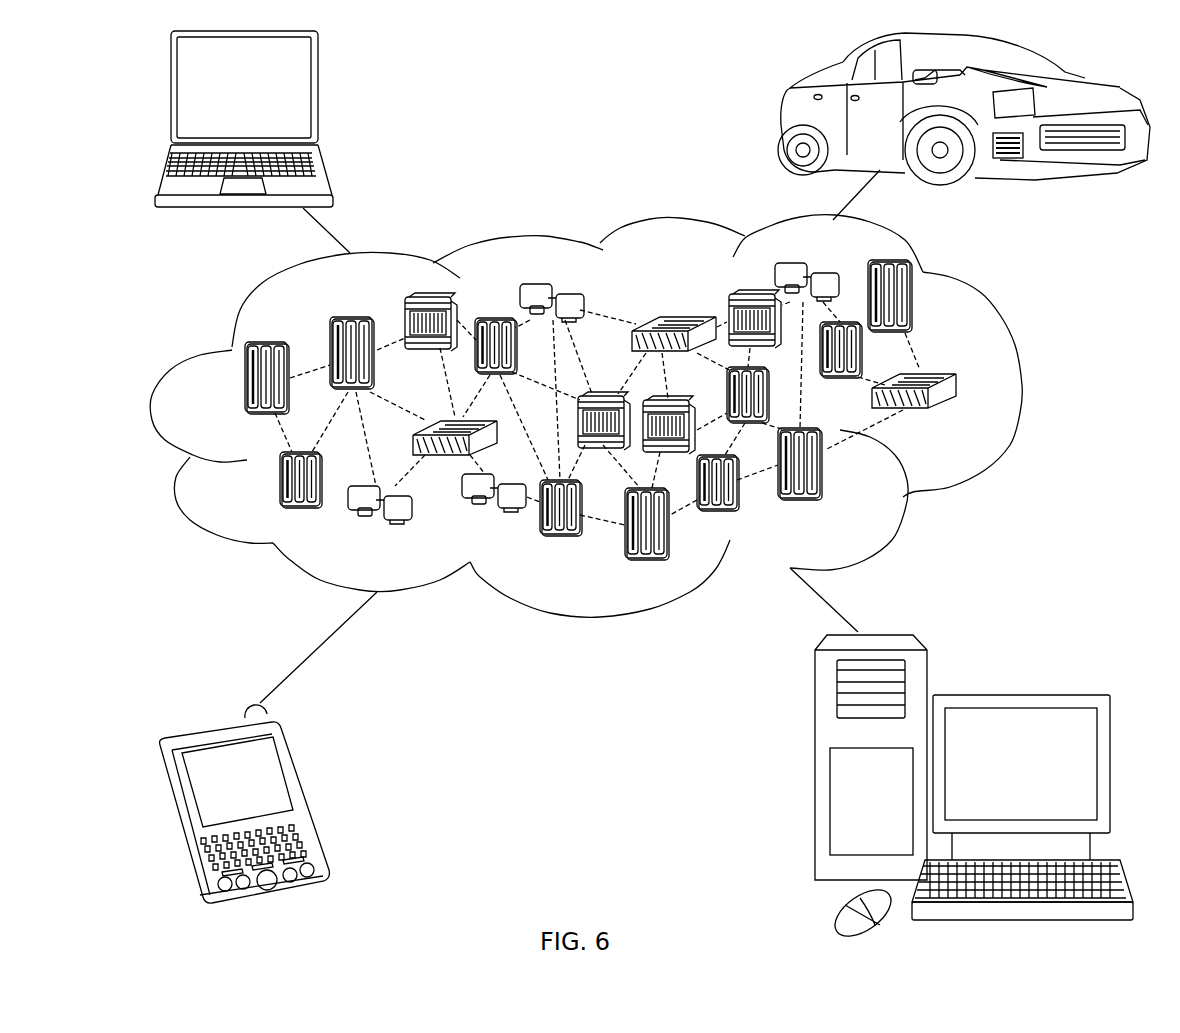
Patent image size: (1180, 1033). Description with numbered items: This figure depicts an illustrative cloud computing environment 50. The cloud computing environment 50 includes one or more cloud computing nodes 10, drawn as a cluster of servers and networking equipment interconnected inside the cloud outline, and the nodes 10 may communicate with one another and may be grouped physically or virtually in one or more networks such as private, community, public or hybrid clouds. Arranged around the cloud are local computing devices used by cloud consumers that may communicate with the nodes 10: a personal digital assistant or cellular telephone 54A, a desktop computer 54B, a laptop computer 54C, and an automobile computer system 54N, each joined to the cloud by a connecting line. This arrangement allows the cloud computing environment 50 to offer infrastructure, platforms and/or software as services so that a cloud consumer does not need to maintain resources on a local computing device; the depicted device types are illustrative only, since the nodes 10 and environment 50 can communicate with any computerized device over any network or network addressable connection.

The cloud computing node 10 is at (962, 421).
The cloud computing environment 50 is at (1023, 391).
The personal digital assistant or cellular telephone 54A is at (312, 798).
The desktop computer 54B is at (1018, 695).
The laptop computer 54C is at (322, 100).
The automobile computer system 54N is at (783, 117).